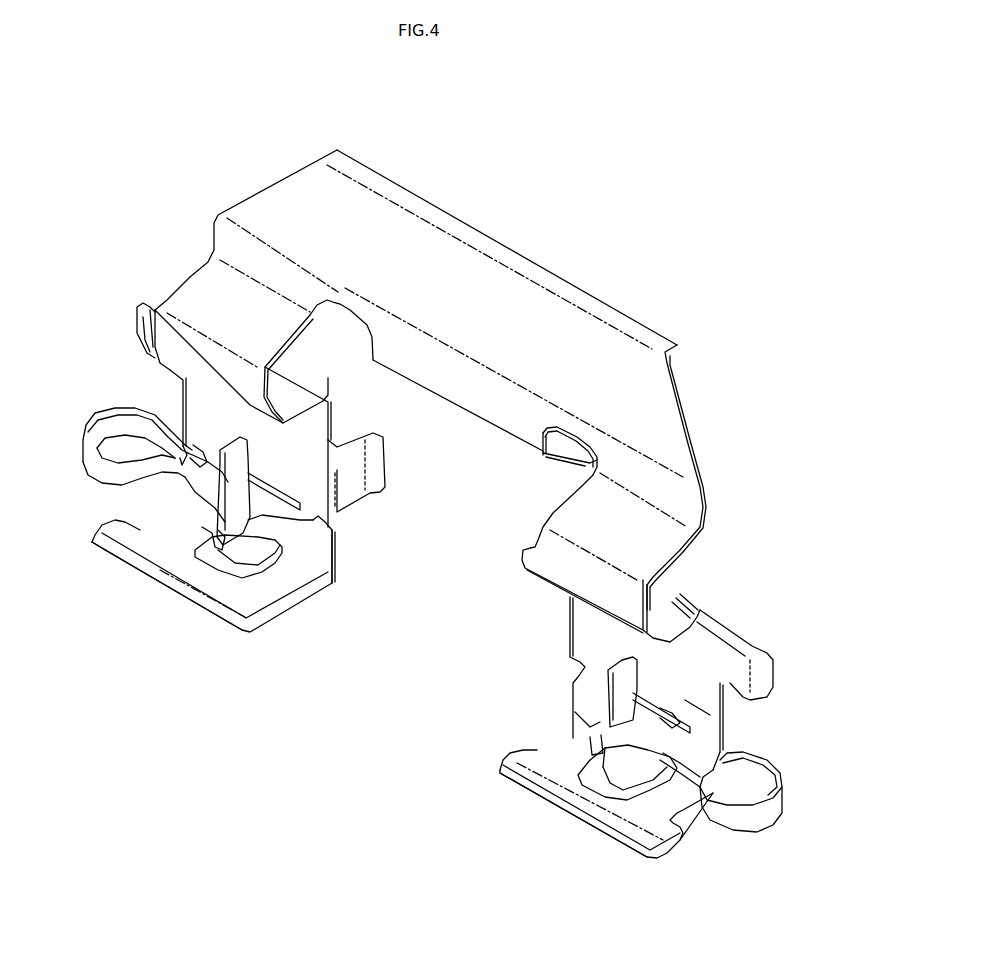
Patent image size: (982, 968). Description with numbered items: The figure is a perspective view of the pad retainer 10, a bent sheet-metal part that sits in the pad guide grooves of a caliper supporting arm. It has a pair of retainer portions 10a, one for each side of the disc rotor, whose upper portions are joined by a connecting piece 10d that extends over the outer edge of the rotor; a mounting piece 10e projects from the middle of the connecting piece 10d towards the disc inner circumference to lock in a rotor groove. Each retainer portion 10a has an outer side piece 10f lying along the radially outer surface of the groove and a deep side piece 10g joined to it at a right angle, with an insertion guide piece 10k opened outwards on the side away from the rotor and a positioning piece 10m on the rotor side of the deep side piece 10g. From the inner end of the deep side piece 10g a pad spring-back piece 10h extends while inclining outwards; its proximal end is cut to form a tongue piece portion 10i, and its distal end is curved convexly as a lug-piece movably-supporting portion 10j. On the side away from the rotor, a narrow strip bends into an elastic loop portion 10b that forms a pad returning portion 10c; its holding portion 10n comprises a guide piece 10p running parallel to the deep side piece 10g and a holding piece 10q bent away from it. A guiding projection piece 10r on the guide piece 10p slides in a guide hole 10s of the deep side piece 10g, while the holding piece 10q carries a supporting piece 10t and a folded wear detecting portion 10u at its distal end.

The pad retainer 10 is at (518, 157).
The retainer portion 10a is at (340, 565).
The elastic loop portion 10b is at (83, 451).
The pad returning portion 10c is at (100, 408).
The connecting piece 10d is at (502, 280).
The mounting piece 10e is at (553, 463).
The outer side piece 10f is at (297, 407).
The deep side piece 10g is at (180, 395).
The pad spring-back piece 10h is at (298, 598).
The tongue piece portion 10i is at (260, 565).
The lug-piece movably-supporting portion 10j is at (160, 567).
The insertion guide piece 10k is at (147, 326).
The positioning piece 10m is at (380, 465).
The holding portion 10n is at (170, 479).
The guide piece 10p is at (203, 450).
The holding piece 10q is at (257, 518).
The guiding projection piece 10r is at (228, 445).
The guide hole 10s is at (280, 500).
The supporting piece 10t is at (243, 455).
The wear detecting portion 10u is at (213, 545).